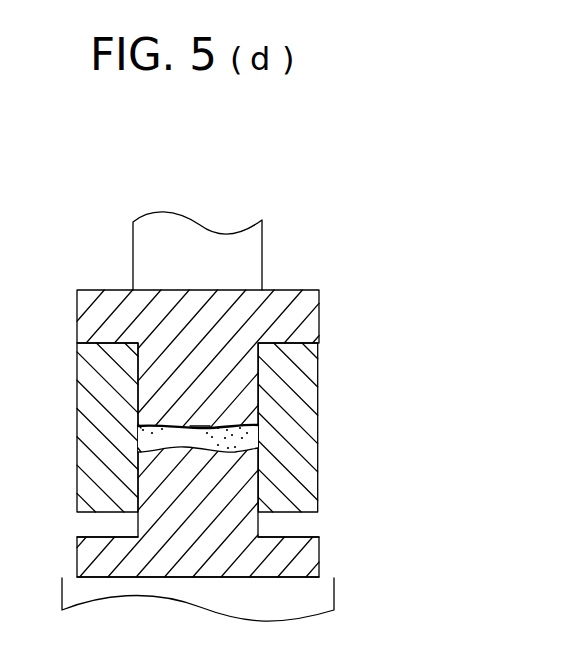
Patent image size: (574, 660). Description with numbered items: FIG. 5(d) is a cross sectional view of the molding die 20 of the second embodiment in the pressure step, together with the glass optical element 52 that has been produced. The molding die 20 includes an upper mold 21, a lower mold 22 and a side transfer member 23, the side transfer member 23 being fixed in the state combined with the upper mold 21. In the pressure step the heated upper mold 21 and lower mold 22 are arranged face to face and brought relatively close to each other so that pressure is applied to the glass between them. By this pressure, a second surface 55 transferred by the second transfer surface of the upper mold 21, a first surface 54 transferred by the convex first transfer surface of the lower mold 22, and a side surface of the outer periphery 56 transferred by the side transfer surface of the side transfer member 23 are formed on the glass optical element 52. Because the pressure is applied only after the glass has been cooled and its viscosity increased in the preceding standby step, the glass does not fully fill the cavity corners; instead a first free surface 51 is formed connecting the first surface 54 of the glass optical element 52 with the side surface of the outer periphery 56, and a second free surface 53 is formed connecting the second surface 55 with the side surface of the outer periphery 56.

The molding die 20 is at (95, 222).
The upper mold 21 is at (290, 317).
The lower mold 22 is at (303, 551).
The side transfer member 23 is at (303, 497).
The first free surface 51 is at (256, 453).
The glass optical element 52 is at (138, 424).
The second free surface 53 is at (258, 426).
The first surface 54 is at (202, 450).
The second surface 55 is at (198, 424).
The side surface of the outer periphery 56 is at (138, 448).